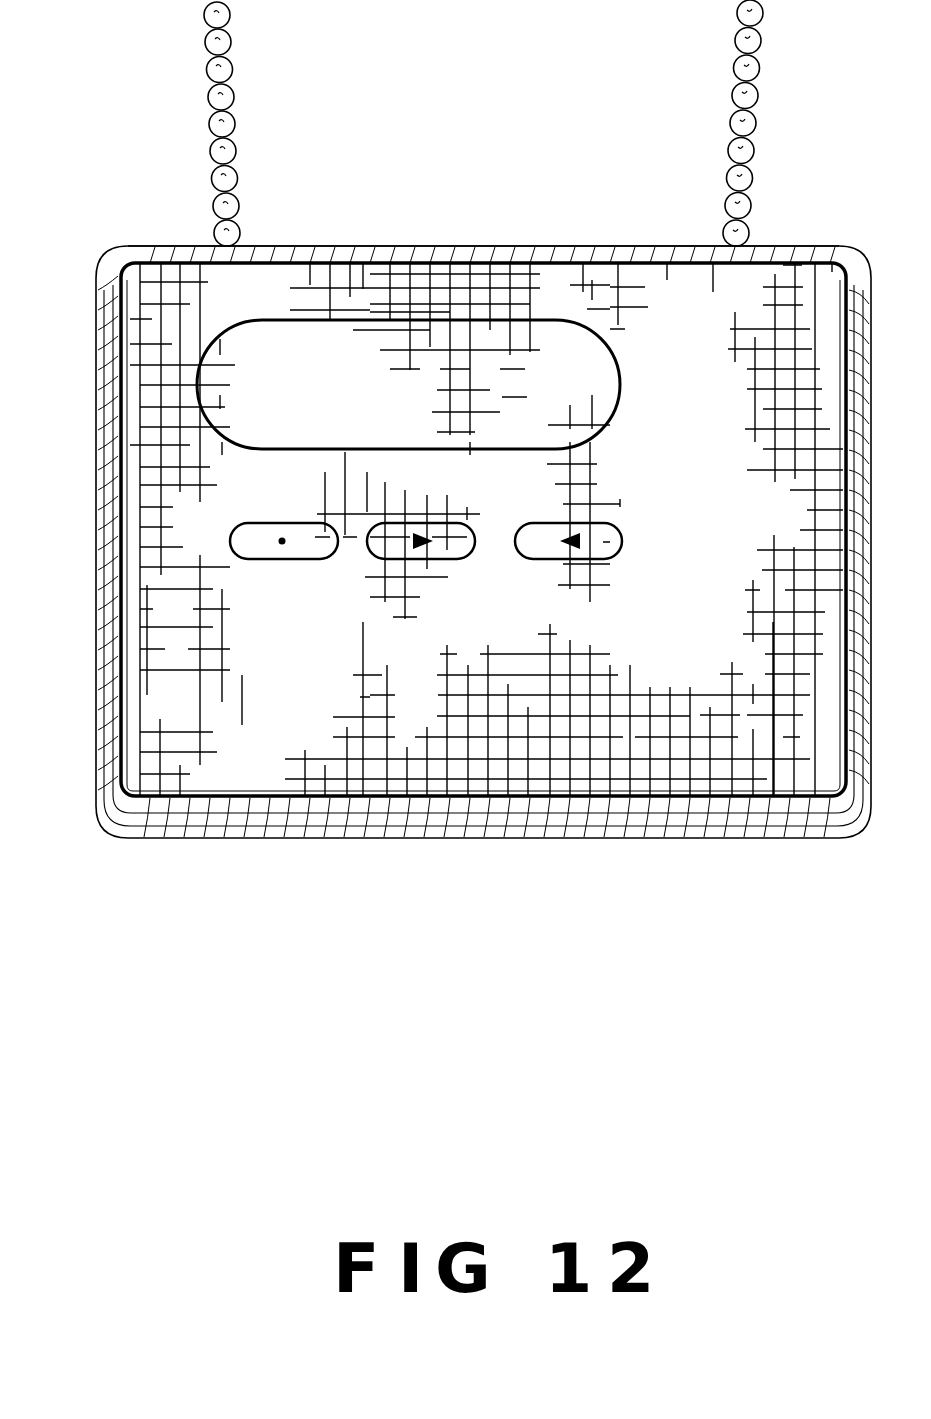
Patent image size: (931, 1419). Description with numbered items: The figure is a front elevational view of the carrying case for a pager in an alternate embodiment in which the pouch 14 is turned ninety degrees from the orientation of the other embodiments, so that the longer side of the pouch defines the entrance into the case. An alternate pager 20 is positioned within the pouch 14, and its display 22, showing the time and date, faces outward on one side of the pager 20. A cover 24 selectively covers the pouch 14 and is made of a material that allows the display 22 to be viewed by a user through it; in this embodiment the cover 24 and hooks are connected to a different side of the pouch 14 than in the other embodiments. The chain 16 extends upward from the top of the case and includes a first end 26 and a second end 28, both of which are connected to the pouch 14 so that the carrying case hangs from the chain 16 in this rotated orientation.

The pouch 14 is at (97, 452).
The chain 16 is at (211, 48).
The pager 20 is at (693, 262).
The display 22 is at (556, 335).
The cover 24 is at (343, 248).
The first end 26 is at (240, 245).
The second end 28 is at (747, 236).